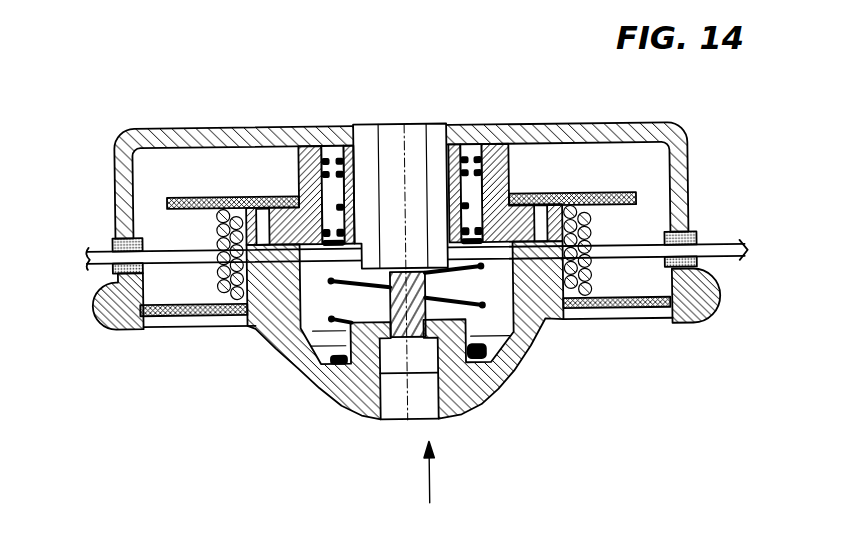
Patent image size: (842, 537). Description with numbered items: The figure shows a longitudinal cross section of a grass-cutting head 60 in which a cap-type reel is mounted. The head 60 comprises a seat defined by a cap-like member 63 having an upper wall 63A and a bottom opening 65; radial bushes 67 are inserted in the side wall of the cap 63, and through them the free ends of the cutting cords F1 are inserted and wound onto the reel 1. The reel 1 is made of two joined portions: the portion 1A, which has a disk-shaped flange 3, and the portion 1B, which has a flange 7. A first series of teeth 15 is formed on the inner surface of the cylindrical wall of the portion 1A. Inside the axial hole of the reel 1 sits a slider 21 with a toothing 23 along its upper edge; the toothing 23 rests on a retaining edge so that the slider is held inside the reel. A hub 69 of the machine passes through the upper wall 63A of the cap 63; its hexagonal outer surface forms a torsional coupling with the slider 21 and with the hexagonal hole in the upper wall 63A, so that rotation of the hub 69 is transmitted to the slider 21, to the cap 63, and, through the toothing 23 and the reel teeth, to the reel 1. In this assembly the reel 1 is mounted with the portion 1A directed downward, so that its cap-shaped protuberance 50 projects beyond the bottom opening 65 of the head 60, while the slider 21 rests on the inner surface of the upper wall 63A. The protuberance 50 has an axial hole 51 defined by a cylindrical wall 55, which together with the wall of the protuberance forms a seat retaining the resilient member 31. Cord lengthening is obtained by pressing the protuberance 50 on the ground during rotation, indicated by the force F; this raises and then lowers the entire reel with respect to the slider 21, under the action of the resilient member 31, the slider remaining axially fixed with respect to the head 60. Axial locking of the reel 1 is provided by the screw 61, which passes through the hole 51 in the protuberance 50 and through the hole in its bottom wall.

The reel 1 is at (568, 330).
The portion of the reel 1A is at (208, 316).
The portion of the reel 1B is at (192, 189).
The flange 3 is at (643, 303).
The flange 7 is at (627, 140).
The first series of teeth 15 is at (527, 284).
The slider 21 is at (512, 161).
The toothing 23 is at (317, 243).
The resilient member 31 is at (293, 357).
The protuberance 50 is at (338, 402).
The axial hole 51 is at (415, 422).
The cylindrical wall 55 is at (520, 374).
The head 60 is at (682, 130).
The screw 61 is at (393, 420).
The cap-like member 63 is at (692, 186).
The upper wall of the cap 63A is at (235, 125).
The bottom opening 65 is at (143, 327).
The radial bushes 67 is at (103, 233).
The hub 69 is at (432, 142).
The force F is at (428, 483).
The cutting cords F1 is at (178, 244).